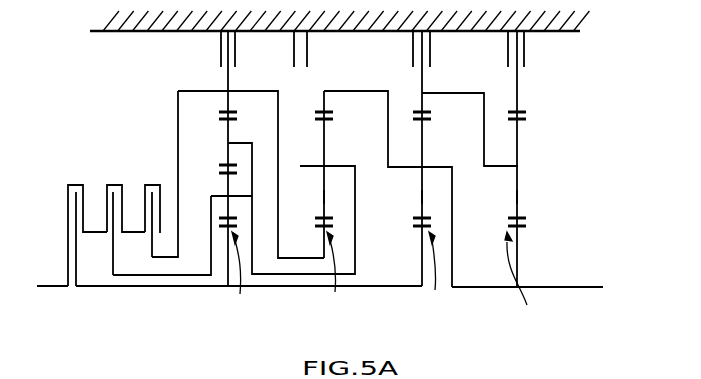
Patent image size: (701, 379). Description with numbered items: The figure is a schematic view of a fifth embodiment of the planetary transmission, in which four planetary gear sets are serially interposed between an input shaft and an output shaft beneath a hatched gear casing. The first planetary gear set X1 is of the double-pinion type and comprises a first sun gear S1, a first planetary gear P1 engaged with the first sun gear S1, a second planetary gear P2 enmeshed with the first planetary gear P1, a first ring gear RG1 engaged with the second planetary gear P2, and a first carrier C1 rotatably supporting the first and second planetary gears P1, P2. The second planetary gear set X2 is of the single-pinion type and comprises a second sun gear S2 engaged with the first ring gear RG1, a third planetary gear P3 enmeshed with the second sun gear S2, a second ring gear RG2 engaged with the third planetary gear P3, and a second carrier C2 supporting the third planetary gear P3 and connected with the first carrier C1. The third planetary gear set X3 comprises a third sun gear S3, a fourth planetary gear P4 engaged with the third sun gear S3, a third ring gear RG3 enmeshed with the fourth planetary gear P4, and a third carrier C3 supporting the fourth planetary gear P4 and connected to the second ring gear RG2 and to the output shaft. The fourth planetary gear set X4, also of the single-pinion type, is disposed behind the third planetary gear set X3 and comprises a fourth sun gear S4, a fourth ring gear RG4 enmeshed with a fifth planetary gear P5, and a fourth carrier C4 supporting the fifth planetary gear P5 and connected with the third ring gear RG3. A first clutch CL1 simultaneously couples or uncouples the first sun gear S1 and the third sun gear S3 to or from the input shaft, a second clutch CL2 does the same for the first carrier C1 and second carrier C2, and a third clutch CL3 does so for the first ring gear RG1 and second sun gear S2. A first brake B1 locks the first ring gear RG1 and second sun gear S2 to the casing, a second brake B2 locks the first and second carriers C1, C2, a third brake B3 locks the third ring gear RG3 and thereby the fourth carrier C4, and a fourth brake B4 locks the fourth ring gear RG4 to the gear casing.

The first brake B1 is at (218, 46).
The second brake B2 is at (309, 46).
The third brake B3 is at (432, 46).
The fourth brake B4 is at (526, 46).
The first ring gear RG1 is at (232, 104).
The second ring gear RG2 is at (328, 104).
The third ring gear RG3 is at (426, 104).
The fourth ring gear RG4 is at (521, 104).
The first carrier C1 is at (234, 141).
The second carrier C2 is at (333, 166).
The third carrier C3 is at (427, 167).
The fourth carrier C4 is at (520, 166).
The first planetary gear P1 is at (227, 184).
The second planetary gear P2 is at (227, 154).
The third planetary gear P3 is at (323, 197).
The fourth planetary gear P4 is at (421, 198).
The fifth planetary gear P5 is at (519, 197).
The first sun gear S1 is at (222, 241).
The second sun gear S2 is at (320, 241).
The third sun gear S3 is at (419, 241).
The fourth sun gear S4 is at (519, 242).
The first clutch CL1 is at (76, 185).
The second clutch CL2 is at (113, 185).
The third clutch CL3 is at (152, 185).
The first planetary gear set X1 is at (244, 276).
The second planetary gear set X2 is at (342, 276).
The third planetary gear set X3 is at (441, 276).
The fourth planetary gear set X4 is at (531, 276).